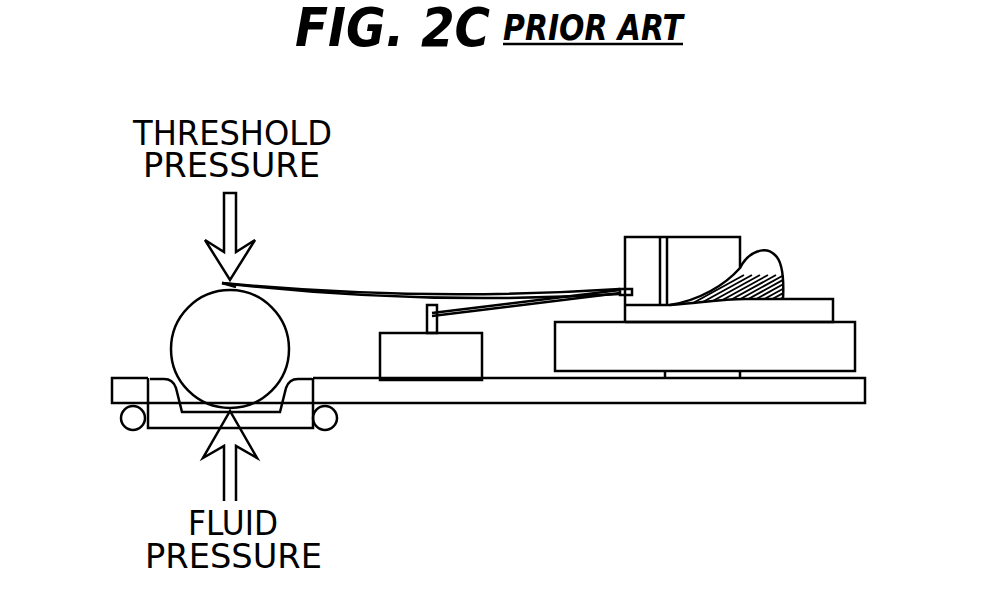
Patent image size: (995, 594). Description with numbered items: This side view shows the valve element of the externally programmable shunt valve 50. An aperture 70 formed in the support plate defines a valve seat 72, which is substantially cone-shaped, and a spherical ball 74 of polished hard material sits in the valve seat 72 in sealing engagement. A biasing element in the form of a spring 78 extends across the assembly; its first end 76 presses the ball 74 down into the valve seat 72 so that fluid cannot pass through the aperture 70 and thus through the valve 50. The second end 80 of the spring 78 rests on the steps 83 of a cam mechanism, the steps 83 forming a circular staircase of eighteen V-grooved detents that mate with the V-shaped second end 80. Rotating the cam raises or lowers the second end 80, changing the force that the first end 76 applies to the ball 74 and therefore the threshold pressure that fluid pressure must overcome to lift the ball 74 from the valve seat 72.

The shunt valve 50 is at (785, 178).
The aperture 70 is at (147, 387).
The valve seat 72 is at (280, 393).
The ball 74 is at (178, 338).
The first end of the spring 76 is at (240, 278).
The spring 78 is at (379, 291).
The second end of the spring 80 is at (613, 287).
The steps 83 is at (762, 260).